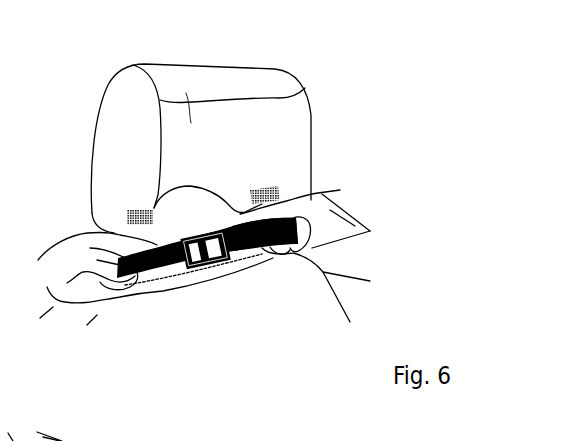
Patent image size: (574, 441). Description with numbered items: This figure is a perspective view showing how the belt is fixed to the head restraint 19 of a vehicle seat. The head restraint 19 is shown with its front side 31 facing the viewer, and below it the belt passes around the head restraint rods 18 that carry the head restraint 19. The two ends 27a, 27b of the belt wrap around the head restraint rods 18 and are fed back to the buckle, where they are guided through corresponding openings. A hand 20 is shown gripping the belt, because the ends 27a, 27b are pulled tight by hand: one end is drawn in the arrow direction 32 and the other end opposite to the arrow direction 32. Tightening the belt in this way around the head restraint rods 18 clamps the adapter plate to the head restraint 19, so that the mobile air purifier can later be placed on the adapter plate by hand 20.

The head restraint rods 18 is at (240, 210).
The head restraint 19 is at (290, 148).
The hand 20 is at (370, 231).
The end of the belt 27a is at (241, 264).
The end of the belt 27b is at (171, 270).
The front side 31 is at (232, 130).
The arrow direction 32 is at (279, 184).